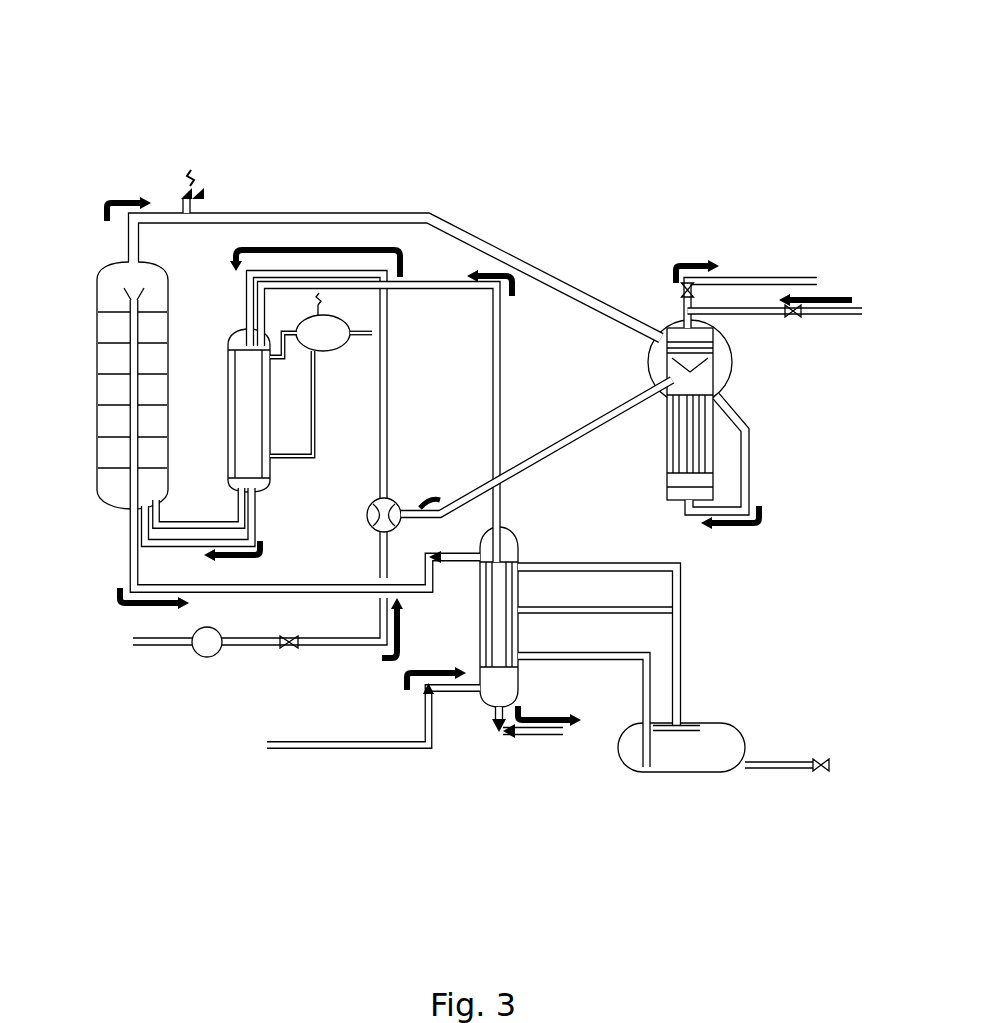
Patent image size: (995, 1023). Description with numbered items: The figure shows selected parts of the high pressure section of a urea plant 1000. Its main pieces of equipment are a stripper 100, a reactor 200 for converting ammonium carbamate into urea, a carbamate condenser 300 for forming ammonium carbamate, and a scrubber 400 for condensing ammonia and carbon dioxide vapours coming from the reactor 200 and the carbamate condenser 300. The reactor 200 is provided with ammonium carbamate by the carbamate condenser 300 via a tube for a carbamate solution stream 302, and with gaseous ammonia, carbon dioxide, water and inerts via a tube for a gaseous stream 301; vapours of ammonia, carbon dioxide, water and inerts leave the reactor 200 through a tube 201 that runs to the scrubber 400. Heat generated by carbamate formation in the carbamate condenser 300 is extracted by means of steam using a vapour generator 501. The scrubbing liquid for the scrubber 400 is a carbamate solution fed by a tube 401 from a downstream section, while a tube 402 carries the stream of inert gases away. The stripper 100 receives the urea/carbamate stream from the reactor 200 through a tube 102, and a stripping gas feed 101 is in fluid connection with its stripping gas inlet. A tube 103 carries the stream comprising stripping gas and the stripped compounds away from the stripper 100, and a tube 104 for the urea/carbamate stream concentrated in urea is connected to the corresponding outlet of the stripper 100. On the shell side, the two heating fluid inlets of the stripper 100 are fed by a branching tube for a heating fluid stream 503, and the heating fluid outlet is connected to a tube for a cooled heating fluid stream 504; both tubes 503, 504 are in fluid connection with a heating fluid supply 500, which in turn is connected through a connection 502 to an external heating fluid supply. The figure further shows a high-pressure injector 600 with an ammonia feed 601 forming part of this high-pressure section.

The high pressure section of a urea plant 1000 is at (126, 75).
The stripper 100 is at (518, 533).
The stripping gas feed 101 is at (312, 749).
The tube for a urea/carbamate stream 102 is at (125, 567).
The tube for stream comprising stripping gas and one or more stripped compounds 103 is at (500, 399).
The tube for a urea/carbamate stream concentrated in urea 104 is at (518, 736).
The reactor 200 is at (97, 402).
The tube for vapours of NH3, CO2, water, and inerts 201 is at (325, 212).
The carbamate condenser 300 is at (230, 336).
The tube for gaseous stream 301 is at (198, 520).
The tube for carbamate solution stream 302 is at (256, 523).
The scrubber 400 is at (663, 438).
The tube for carbamate solution feed from downstream section 401 is at (815, 318).
The tube for stream of inert gases 402 is at (765, 276).
The heating fluid supply 500 is at (708, 722).
The vapour generator 501 is at (327, 354).
The connection to external heating fluid supply 502 is at (773, 768).
The tube for heating fluid stream 503 is at (678, 640).
The tube for cooled heating fluid stream 504 is at (548, 650).
The high-pressure injector 600 is at (395, 500).
The ammonia feed 601 is at (172, 645).